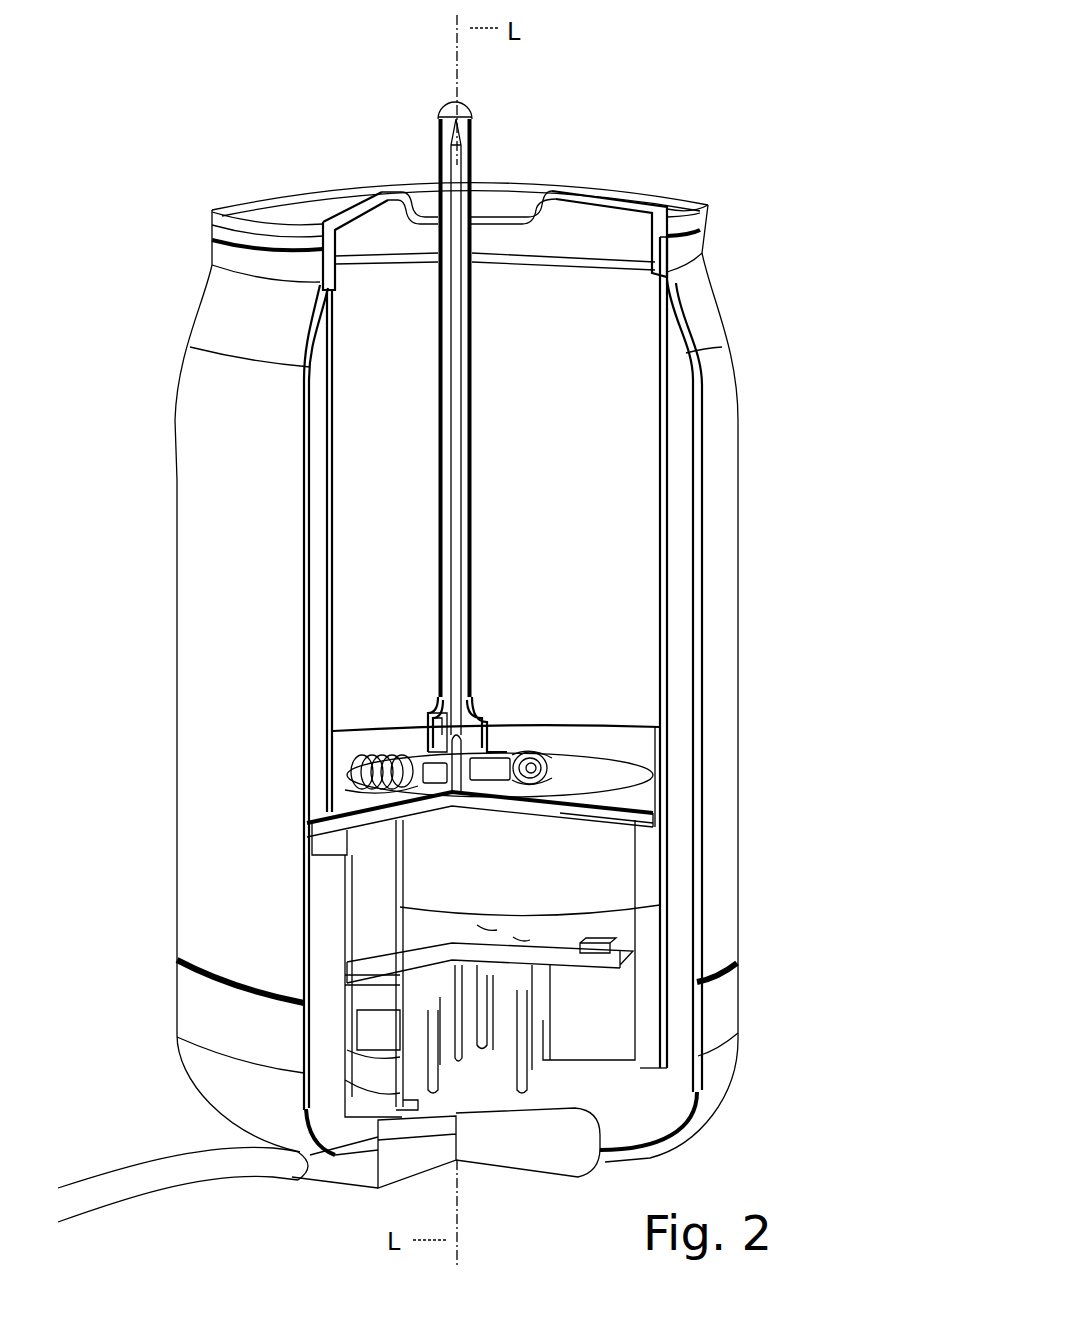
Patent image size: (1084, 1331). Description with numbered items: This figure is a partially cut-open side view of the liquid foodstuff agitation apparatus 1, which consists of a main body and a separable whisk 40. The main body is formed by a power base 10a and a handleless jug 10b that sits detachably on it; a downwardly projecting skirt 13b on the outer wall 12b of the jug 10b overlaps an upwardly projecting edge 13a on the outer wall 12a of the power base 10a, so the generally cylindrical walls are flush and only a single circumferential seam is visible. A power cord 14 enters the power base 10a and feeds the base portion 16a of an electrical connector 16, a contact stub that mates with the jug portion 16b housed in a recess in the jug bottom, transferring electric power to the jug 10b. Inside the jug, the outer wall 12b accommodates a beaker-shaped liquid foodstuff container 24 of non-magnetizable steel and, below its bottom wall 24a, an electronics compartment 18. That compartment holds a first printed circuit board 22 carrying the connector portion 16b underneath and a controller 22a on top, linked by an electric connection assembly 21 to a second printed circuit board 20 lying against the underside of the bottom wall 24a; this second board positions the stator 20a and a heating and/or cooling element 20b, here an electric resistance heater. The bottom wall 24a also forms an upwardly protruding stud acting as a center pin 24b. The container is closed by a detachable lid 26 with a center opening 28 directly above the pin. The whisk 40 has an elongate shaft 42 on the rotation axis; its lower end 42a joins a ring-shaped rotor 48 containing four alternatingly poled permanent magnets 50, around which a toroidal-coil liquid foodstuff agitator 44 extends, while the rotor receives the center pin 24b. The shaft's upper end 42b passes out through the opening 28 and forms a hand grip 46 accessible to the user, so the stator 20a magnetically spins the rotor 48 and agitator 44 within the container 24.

The liquid foodstuff agitation apparatus 1 is at (168, 136).
The power base 10a is at (150, 1090).
The jug 10b is at (150, 882).
The outer wall of the power base 12a is at (718, 1032).
The outer wall of the jug 12b is at (718, 660).
The upwardly projecting edge 13a is at (706, 970).
The downwardly projecting skirt 13b is at (718, 940).
The power cord 14 is at (142, 1175).
The electrical connector 16 is at (393, 1047).
The base portion of the electrical connector 16a is at (468, 1075).
The jug portion of the electrical connector 16b is at (522, 1002).
The electronics compartment 18 is at (506, 896).
The second printed circuit board 20 is at (437, 800).
The stator 20a is at (527, 797).
The heating and/or cooling element 20b is at (593, 810).
The electric connection assembly 21 is at (378, 882).
The first printed circuit board 22 is at (546, 930).
The controller 22a is at (592, 943).
The liquid foodstuff container 24 is at (678, 558).
The bottom wall of the container 24a is at (592, 778).
The center pin 24b is at (436, 718).
The lid 26 is at (655, 205).
The center opening 28 is at (482, 190).
The whisk 40 is at (484, 535).
The elongate shaft 42 is at (458, 412).
The lower end of the shaft 42a is at (474, 714).
The upper end of the shaft 42b is at (424, 116).
The liquid foodstuff agitator 44 is at (357, 770).
The hand grip 46 is at (449, 133).
The rotor 48 is at (512, 750).
The permanent magnet 50 is at (492, 772).